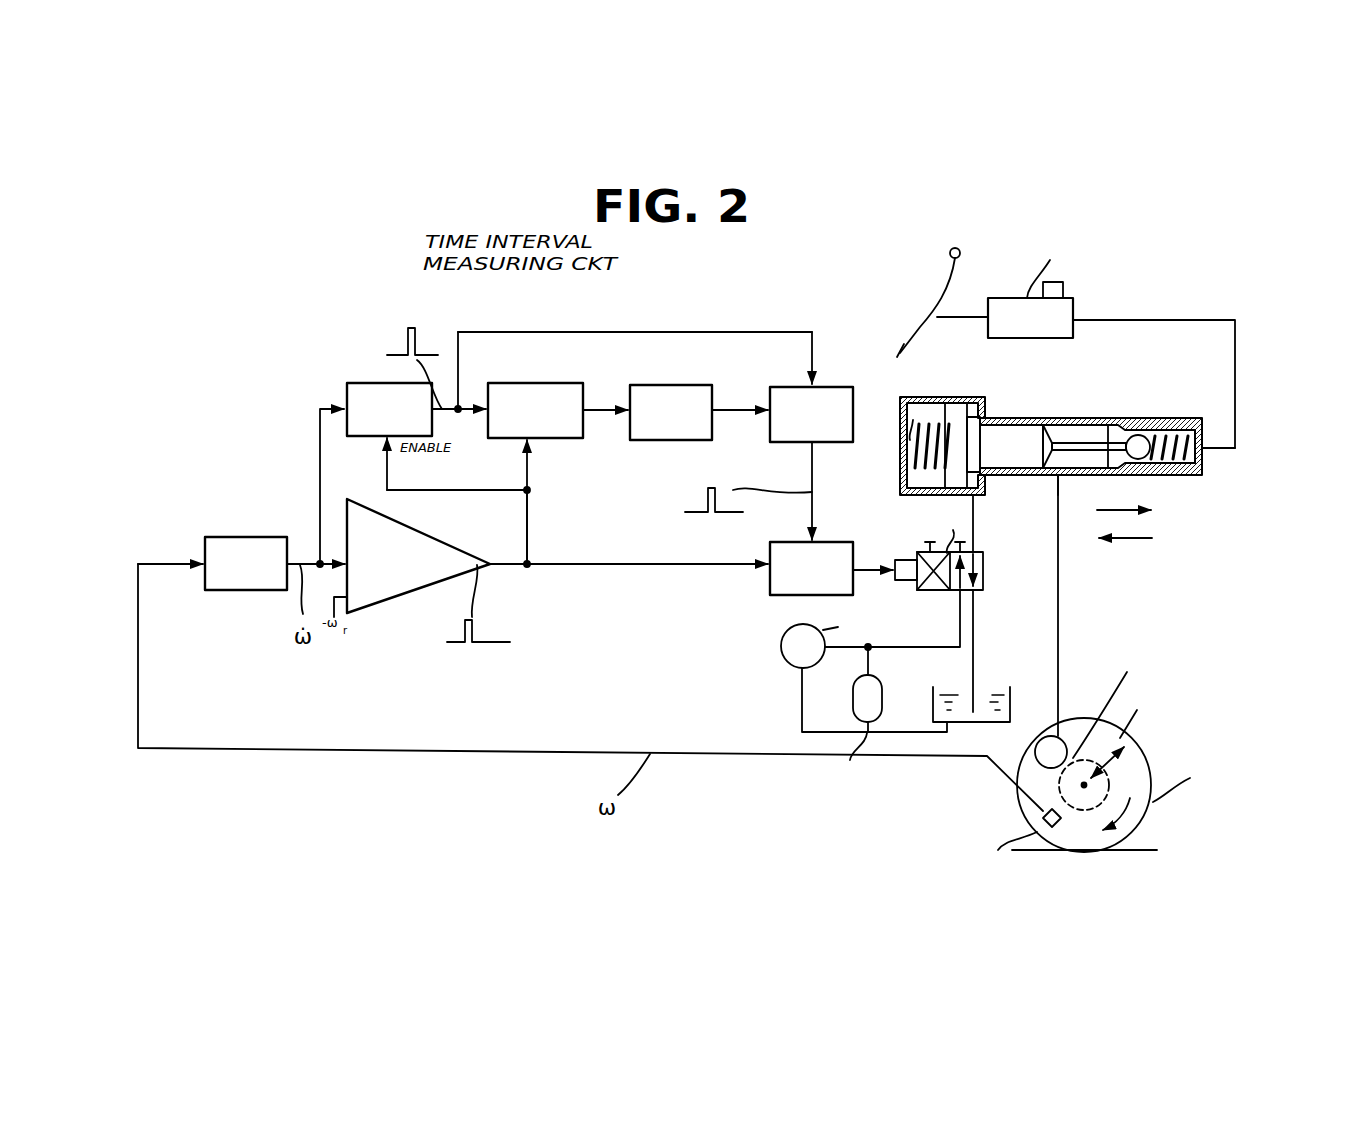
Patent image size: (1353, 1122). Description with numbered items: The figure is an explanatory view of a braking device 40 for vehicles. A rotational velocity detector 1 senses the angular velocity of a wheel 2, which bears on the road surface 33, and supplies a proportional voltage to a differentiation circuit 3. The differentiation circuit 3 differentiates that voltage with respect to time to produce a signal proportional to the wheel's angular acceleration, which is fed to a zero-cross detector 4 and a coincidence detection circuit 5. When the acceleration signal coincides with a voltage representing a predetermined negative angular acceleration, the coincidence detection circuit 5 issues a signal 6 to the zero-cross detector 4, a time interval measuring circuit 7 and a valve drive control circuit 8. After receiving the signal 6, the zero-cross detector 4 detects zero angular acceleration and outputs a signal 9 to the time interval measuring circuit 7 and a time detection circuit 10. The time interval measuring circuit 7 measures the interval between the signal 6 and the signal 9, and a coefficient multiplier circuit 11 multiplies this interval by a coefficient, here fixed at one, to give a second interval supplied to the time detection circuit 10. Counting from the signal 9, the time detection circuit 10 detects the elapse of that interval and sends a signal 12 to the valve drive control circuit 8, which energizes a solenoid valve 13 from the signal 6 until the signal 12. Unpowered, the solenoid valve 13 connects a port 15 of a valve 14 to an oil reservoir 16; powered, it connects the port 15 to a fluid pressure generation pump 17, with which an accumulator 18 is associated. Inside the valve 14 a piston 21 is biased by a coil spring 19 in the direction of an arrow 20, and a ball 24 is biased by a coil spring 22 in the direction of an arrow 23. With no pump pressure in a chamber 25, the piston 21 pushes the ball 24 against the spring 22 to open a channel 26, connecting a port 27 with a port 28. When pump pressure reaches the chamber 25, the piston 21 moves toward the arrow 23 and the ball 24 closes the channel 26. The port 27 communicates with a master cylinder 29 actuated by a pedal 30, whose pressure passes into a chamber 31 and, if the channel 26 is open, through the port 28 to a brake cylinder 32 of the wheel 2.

The rotational velocity detector 1 is at (1042, 820).
The wheel 2 is at (1133, 777).
The differentiation circuit 3 is at (253, 537).
The zero-cross detector 4 is at (383, 383).
The coincidence detection circuit 5 is at (400, 598).
The signal 6 is at (477, 623).
The time interval measuring circuit 7 is at (527, 383).
The valve drive control circuit 8 is at (768, 580).
The signal 9 is at (407, 330).
The time detection circuit 10 is at (795, 387).
The coefficient multiplier circuit 11 is at (660, 385).
The signal 12 is at (703, 497).
The solenoid valve 13 is at (910, 582).
The valve 14 is at (1030, 423).
The port 15 is at (977, 493).
The oil reservoir 16 is at (1012, 698).
The fluid pressure generation pump 17 is at (780, 645).
The accumulator 18 is at (853, 693).
The coil spring 19 is at (918, 422).
The arrow 20 is at (1123, 512).
The piston 21 is at (998, 453).
The coil spring 22 is at (1168, 437).
The arrow 23 is at (1127, 540).
The ball 24 is at (1135, 440).
The chamber 25 is at (975, 410).
The channel 26 is at (1087, 430).
The port 27 is at (1205, 455).
The port 28 is at (1058, 473).
The master cylinder 29 is at (1077, 308).
The pedal 30 is at (920, 327).
The chamber 31 is at (1187, 430).
The brake cylinder 32 is at (1068, 748).
The road surface 33 is at (1142, 850).
The braking device 40 is at (728, 311).